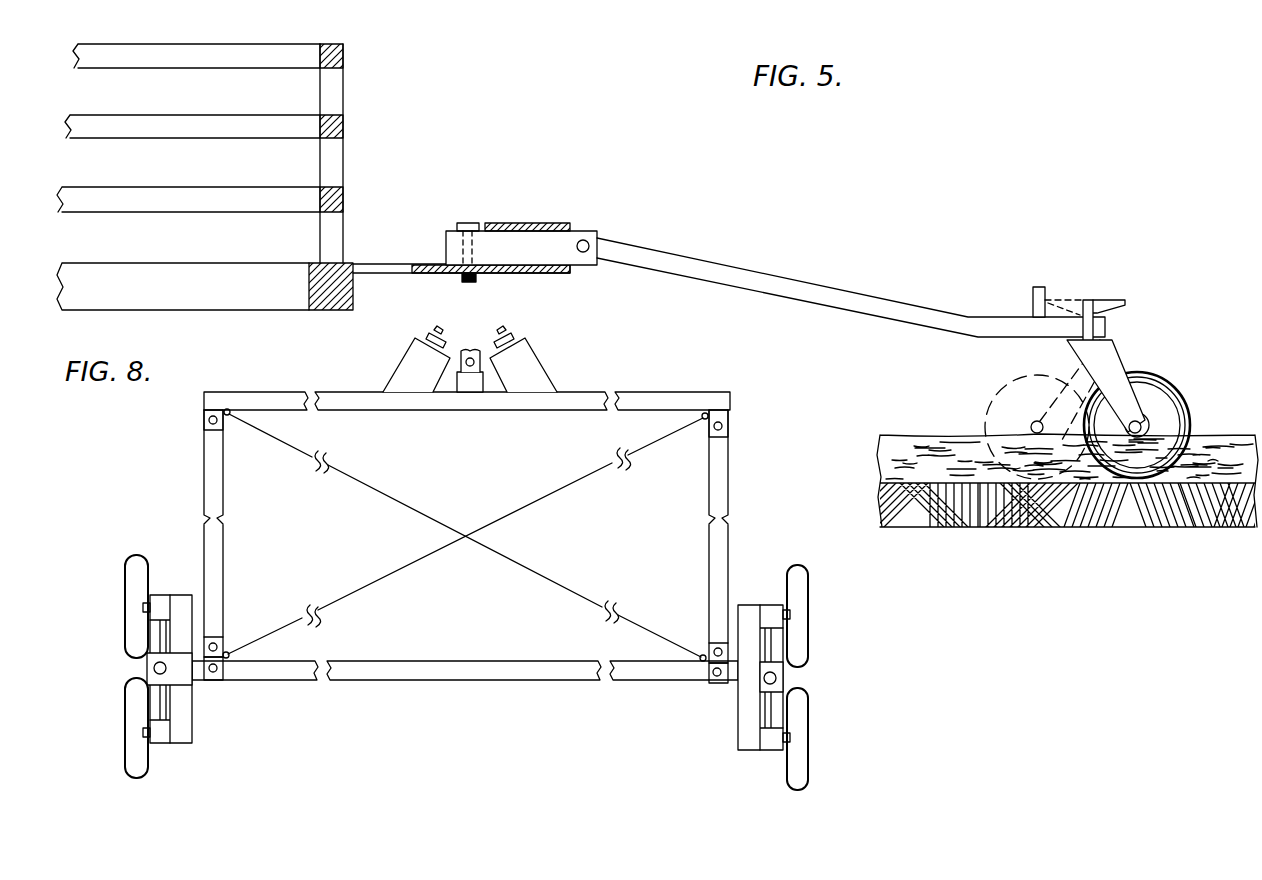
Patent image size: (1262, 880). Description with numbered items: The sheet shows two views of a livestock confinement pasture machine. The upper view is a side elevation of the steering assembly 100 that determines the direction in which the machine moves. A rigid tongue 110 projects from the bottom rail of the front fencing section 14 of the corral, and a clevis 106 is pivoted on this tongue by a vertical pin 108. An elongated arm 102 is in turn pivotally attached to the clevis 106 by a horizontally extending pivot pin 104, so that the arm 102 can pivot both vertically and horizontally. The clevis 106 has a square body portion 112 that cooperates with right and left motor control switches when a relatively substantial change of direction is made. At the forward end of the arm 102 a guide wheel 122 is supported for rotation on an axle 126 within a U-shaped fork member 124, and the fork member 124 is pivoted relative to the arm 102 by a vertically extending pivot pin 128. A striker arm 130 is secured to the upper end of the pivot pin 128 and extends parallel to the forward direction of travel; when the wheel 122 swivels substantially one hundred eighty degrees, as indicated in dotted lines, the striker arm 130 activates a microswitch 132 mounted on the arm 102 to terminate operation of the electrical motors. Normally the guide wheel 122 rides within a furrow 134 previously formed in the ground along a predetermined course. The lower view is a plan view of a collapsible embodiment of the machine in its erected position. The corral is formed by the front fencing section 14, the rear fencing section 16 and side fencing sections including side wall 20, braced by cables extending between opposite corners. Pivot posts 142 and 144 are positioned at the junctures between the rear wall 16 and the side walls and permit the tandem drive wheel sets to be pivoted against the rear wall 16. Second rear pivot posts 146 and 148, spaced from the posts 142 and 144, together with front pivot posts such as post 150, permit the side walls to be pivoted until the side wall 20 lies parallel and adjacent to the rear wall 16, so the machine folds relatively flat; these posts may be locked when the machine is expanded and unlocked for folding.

In FIG. 5, the front fencing section 14 is at (343, 160).
In FIG. 8, the front fencing section 14 is at (375, 410).
In FIG. 8, the rear fencing section 16 is at (418, 680).
In FIG. 8, the side fencing section 20 is at (223, 510).
In FIG. 5, the steering assembly 100 is at (929, 370).
In FIG. 5, the elongated arm 102 is at (756, 277).
In FIG. 5, the horizontally extending pivot pin 104 is at (558, 225).
In FIG. 5, the clevis 106 is at (590, 240).
In FIG. 5, the vertical pin 108 is at (466, 222).
In FIG. 5, the rigid tongue 110 is at (402, 274).
In FIG. 5, the square body portion 112 is at (522, 223).
In FIG. 5, the guide wheel 122 is at (1188, 415).
In FIG. 5, the U-shaped fork member 124 is at (1118, 366).
In FIG. 5, the axle 126 is at (1128, 430).
In FIG. 5, the vertically extending pivot pin 128 is at (1098, 342).
In FIG. 5, the striker arm 130 is at (1105, 300).
In FIG. 5, the microswitch 132 is at (1032, 297).
In FIG. 5, the furrow 134 is at (924, 445).
In FIG. 8, the pivot post 142 is at (222, 667).
In FIG. 8, the pivot post 144 is at (714, 676).
In FIG. 8, the second rear pivot post 146 is at (710, 652).
In FIG. 8, the second rear pivot post 148 is at (226, 650).
In FIG. 8, the front pivot post 150 is at (225, 418).